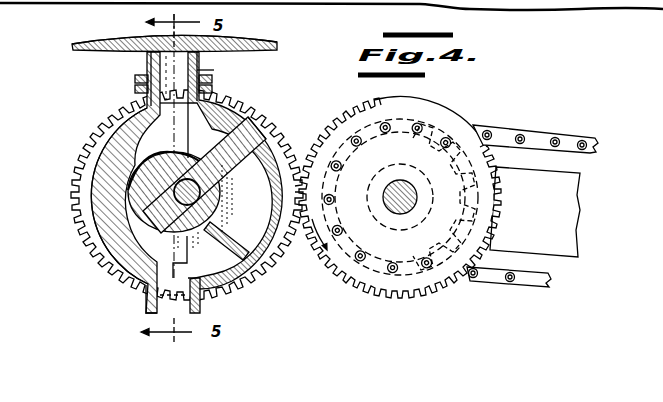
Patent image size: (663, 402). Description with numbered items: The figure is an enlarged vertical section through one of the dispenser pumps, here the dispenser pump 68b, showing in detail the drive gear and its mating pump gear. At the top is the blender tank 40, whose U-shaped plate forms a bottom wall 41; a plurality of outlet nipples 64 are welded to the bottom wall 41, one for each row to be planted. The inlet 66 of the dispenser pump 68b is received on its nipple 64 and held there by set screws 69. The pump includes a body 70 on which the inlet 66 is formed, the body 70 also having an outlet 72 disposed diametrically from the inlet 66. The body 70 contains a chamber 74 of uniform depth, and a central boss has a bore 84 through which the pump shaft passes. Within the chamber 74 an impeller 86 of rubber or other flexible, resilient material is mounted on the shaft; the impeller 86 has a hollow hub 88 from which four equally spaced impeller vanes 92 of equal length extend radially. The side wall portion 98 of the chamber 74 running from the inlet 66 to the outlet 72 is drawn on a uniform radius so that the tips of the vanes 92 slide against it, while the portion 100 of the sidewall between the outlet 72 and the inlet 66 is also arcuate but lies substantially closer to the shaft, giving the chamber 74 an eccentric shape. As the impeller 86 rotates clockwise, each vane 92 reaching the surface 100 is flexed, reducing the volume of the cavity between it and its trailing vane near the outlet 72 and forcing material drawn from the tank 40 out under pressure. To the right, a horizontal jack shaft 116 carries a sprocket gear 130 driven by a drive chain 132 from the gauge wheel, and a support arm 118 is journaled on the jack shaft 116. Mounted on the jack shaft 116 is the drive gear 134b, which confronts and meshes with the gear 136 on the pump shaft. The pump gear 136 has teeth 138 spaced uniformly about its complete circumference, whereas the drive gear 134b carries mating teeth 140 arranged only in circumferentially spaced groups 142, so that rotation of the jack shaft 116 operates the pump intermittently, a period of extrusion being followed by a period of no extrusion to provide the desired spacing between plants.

The blender tank 40 is at (243, 40).
The bottom wall 41 is at (108, 42).
The outlet nipples 64 is at (206, 72).
The inlet 66 is at (140, 100).
The set screws 69 is at (137, 89).
The body 70 is at (234, 281).
The outlet 72 is at (146, 298).
The chamber 74 is at (257, 230).
The bore 84 is at (173, 264).
The impeller 86 is at (203, 159).
The hollow hub 88 is at (147, 166).
The impeller vanes 92 is at (158, 184).
The side wall portion 98 is at (279, 133).
The sidewall portion 100 is at (118, 150).
The jack shaft 116 is at (413, 187).
The support arm 118 is at (578, 181).
The second sprocket gear 130 is at (475, 119).
The drive chain 132 is at (540, 140).
The drive gear 134b is at (445, 110).
The gear 136 is at (100, 128).
The teeth 138 is at (268, 268).
The teeth 140 is at (384, 123).
The groups 142 is at (345, 100).
The dispenser pump 68b is at (92, 218).